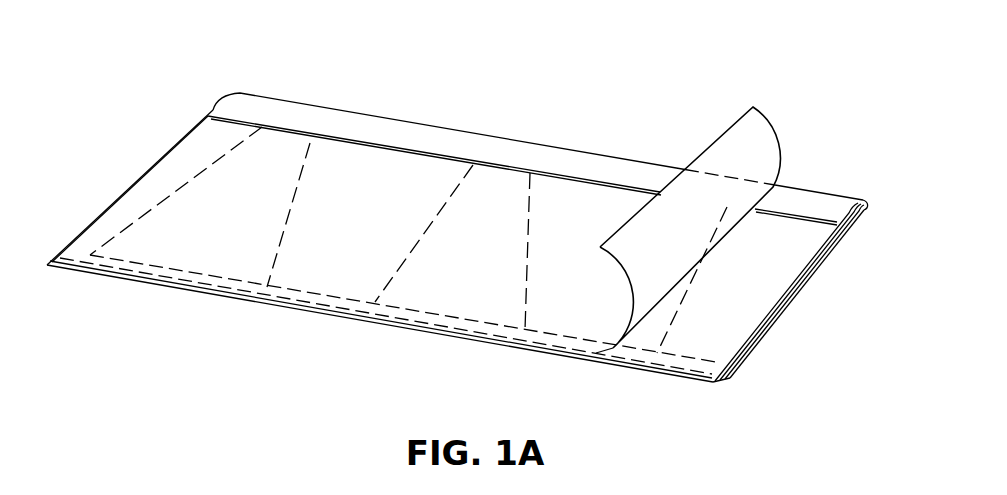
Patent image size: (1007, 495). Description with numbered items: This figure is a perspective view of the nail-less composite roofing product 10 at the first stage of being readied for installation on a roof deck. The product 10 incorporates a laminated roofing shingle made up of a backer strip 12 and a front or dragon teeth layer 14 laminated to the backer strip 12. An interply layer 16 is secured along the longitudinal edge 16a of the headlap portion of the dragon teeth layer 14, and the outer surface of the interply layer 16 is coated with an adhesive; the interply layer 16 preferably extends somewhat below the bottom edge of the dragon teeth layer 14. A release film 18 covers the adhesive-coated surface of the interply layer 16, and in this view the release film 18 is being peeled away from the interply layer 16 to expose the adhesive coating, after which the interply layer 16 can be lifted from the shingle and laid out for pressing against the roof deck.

The nail-less composite roofing product 10 is at (350, 100).
The backer strip 12 is at (794, 300).
The dragon teeth layer 14 is at (757, 340).
The interply layer 16 is at (315, 315).
The longitudinal edge 16a is at (865, 223).
The release film 18 is at (772, 120).